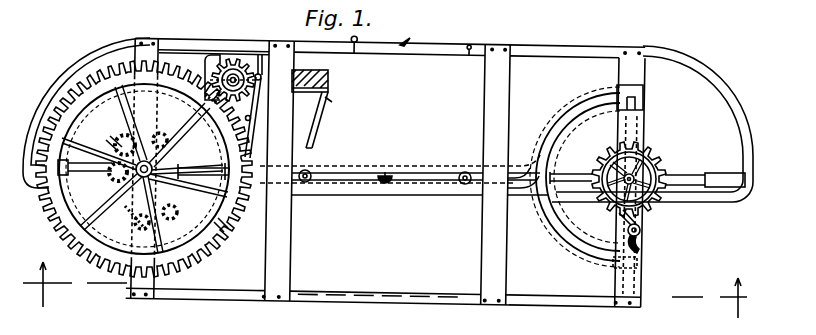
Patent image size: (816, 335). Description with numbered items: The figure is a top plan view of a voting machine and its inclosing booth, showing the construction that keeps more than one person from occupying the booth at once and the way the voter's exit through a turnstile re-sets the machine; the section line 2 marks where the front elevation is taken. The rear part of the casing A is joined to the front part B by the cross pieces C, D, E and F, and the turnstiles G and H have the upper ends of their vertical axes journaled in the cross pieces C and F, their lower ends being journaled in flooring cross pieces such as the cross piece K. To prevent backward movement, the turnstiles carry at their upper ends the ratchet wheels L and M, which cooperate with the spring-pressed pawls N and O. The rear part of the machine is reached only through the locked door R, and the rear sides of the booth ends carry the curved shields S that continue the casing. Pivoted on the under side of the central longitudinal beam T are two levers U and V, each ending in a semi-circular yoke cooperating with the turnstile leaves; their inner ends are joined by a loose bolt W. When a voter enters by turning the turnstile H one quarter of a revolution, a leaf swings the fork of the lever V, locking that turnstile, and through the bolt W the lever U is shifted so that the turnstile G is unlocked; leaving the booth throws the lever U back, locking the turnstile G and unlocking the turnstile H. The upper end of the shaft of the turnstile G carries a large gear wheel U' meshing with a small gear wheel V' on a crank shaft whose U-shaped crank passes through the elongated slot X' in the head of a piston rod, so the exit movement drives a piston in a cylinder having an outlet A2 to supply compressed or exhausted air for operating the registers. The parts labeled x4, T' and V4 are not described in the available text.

The curved shields S is at (72, 65).
The rear part of the casing A is at (540, 50).
The front part of the casing B is at (420, 300).
The cross piece C is at (140, 284).
The cross piece D is at (280, 171).
The cross piece E is at (496, 174).
The cross piece F is at (632, 272).
The turnstile G is at (82, 160).
The ratchet wheel L is at (118, 140).
The spring-pressed pawl N is at (135, 220).
The lever U is at (324, 175).
The large gear wheel U' is at (227, 232).
The lever V is at (564, 177).
The small gear wheel V' is at (234, 59).
The elongated slot X' is at (208, 59).
The lever rod x4 is at (262, 138).
The central longitudinal beam T is at (404, 162).
The block T' is at (310, 81).
The inclined bar V4 is at (318, 124).
The cylinder outlet A2 is at (326, 100).
The loose bolt W is at (388, 185).
The door R is at (411, 36).
The cross piece K is at (641, 100).
The turnstile H is at (645, 108).
The ratchet wheel M is at (658, 152).
The spring-pressed pawl O is at (628, 230).
The section line 2— 2 is at (383, 290).